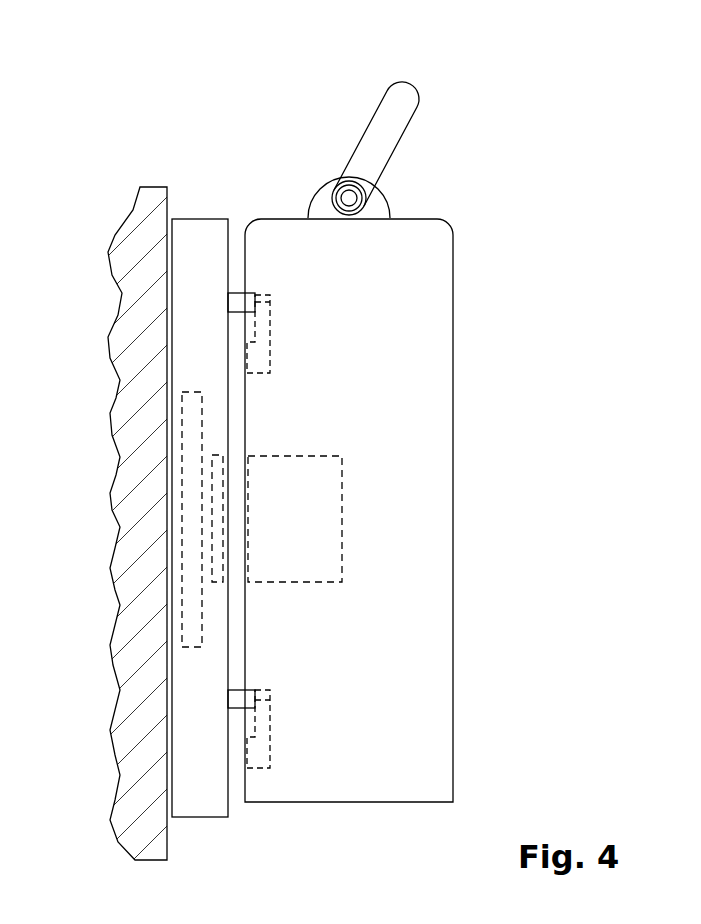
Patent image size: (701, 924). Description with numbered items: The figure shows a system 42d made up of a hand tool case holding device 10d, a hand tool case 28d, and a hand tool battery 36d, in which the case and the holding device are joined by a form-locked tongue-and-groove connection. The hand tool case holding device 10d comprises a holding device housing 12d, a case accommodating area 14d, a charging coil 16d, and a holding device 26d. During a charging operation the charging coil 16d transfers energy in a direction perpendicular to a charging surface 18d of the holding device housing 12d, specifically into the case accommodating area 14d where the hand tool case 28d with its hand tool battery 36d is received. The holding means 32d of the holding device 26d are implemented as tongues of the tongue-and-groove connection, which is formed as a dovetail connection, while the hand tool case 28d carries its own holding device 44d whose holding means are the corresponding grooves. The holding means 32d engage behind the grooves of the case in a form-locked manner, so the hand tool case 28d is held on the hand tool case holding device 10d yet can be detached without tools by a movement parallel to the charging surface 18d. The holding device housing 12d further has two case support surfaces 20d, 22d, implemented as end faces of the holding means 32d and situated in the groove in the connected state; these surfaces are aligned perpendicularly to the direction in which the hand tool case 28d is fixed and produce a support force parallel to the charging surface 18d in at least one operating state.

The hand tool case holding device 10d is at (201, 188).
The holding device housing 12d is at (192, 272).
The case accommodating area 14d is at (350, 100).
The charging coil 16d is at (217, 525).
The charging surface 18d is at (237, 476).
The case support surface 20d is at (266, 284).
The case support surface 22d is at (267, 679).
The holding device 26d is at (287, 335).
The hand tool case 28d is at (437, 242).
The holding means 32d is at (256, 302).
The hand tool battery 36d is at (317, 521).
The system 42d is at (413, 114).
The holding device 44d is at (286, 758).